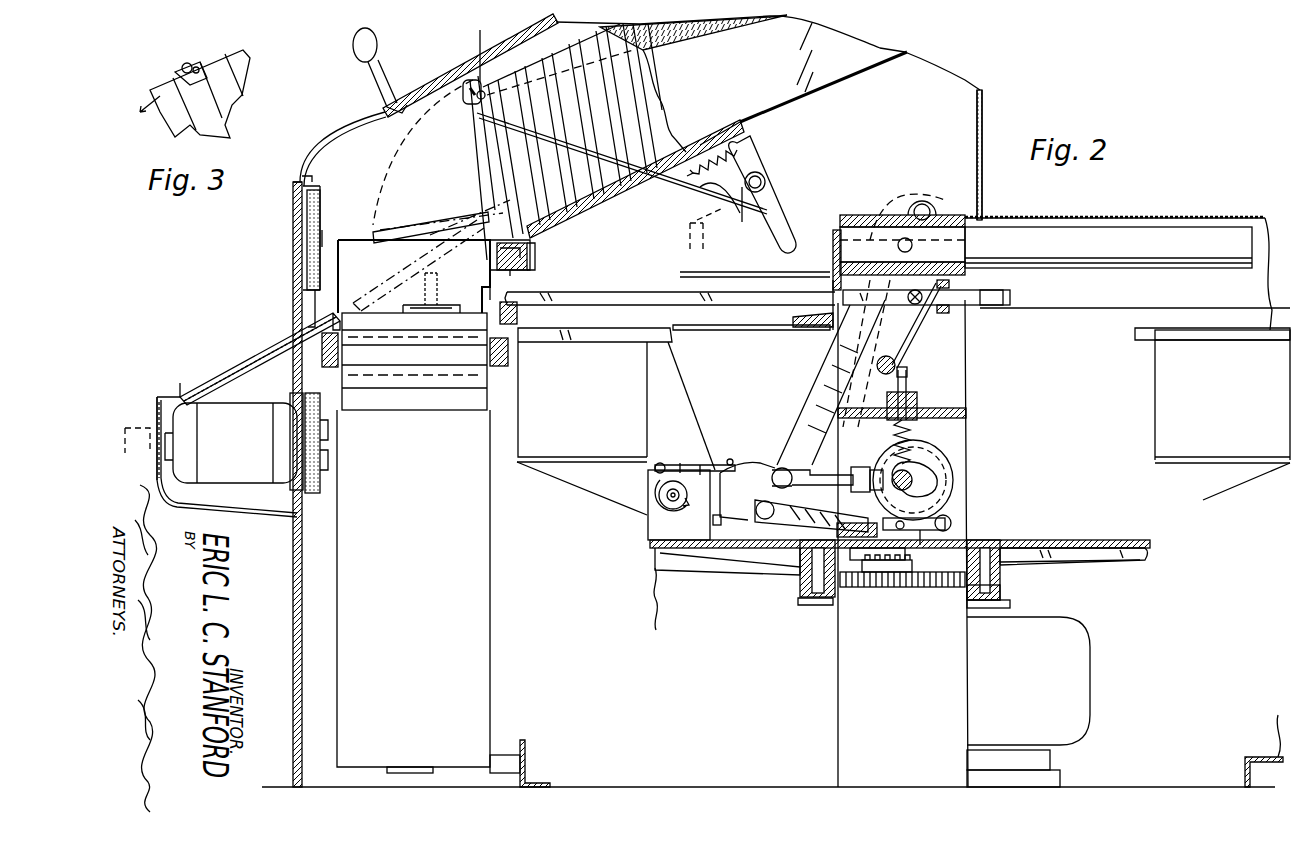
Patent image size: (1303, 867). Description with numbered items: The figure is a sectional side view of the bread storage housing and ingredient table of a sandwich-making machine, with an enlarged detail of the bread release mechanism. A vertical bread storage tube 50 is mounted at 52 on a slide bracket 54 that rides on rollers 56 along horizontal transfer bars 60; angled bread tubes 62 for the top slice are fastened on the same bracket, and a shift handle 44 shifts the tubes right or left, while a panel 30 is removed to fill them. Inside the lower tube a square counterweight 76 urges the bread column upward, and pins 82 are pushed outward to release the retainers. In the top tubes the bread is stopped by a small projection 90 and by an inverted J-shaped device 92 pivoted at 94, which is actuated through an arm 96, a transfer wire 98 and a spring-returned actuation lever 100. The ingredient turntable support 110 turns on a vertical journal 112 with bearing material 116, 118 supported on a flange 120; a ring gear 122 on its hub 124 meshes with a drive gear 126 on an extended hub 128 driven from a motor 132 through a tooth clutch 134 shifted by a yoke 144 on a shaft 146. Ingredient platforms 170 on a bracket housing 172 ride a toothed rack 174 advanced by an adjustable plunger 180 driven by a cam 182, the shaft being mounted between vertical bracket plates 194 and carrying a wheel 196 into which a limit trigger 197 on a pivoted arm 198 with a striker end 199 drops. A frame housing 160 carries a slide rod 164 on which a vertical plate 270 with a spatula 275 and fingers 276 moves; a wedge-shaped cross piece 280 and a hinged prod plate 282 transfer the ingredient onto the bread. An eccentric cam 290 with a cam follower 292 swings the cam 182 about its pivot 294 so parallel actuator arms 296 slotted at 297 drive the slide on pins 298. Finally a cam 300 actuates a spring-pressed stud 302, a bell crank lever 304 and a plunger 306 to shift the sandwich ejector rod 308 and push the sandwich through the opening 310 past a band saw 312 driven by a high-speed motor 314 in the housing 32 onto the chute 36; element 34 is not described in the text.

In FIG. 2, the panel 30 is at (292, 588).
In FIG. 2, the housing 32 is at (160, 485).
In FIG. 2, the housing corner 34 is at (178, 380).
In FIG. 2, the chute 36 is at (246, 352).
In FIG. 2, the shift handle 44 is at (353, 46).
In FIG. 2, the vertical bread storage tube 50 is at (492, 557).
In FIG. 2, the mounting 52 is at (492, 252).
In FIG. 2, the slide bracket 54 is at (530, 232).
In FIG. 2, the rollers 56 is at (537, 258).
In FIG. 2, the horizontal transfer bars 60 is at (516, 275).
In FIG. 2, the bread tubes 62 is at (768, 83).
In FIG. 2, the square counterweight 76 is at (510, 360).
In FIG. 2, the pins 82 is at (438, 285).
In FIG. 2, the small projection 90 is at (520, 222).
In FIG. 3, the inverted J-shaped device 92 is at (192, 50).
In FIG. 2, the inverted J-shaped device 92 is at (467, 103).
In FIG. 3, the pivot mounting 94 is at (198, 68).
In FIG. 2, the pivot mounting 94 is at (470, 62).
In FIG. 2, the arm 96 is at (470, 140).
In FIG. 2, the transfer wire 98 is at (727, 211).
In FIG. 2, the spring-returned actuation lever 100 is at (690, 220).
In FIG. 2, the ingredient turntable support 110 is at (1110, 558).
In FIG. 2, the vertical journal 112 is at (975, 530).
In FIG. 2, the bearing material 116 is at (1002, 594).
In FIG. 2, the bearing material 118 is at (995, 532).
In FIG. 2, the flange 120 is at (1010, 606).
In FIG. 2, the ring gear 122 is at (1005, 580).
In FIG. 2, the hub 124 is at (790, 560).
In FIG. 2, the drive gear 126 is at (875, 590).
In FIG. 2, the extended hub 128 is at (888, 565).
In FIG. 2, the motor 132 is at (1080, 656).
In FIG. 2, the tooth clutch 134 is at (874, 548).
In FIG. 2, the yoke 144 is at (925, 532).
In FIG. 2, the shaft 146 is at (950, 516).
In FIG. 2, the frame housing 160 is at (950, 348).
In FIG. 2, the slide rod 164 is at (1040, 235).
In FIG. 2, the ingredient platforms 170 is at (578, 462).
In FIG. 2, the bracket housing 172 is at (612, 500).
In FIG. 2, the toothed rack 174 is at (650, 628).
In FIG. 2, the adjustable plunger 180 is at (720, 518).
In FIG. 2, the cam 182 is at (770, 478).
In FIG. 2, the vertical bracket plates 194 is at (680, 395).
In FIG. 2, the wheel 196 is at (668, 510).
In FIG. 2, the limit trigger 197 is at (690, 442).
In FIG. 2, the pivoted arm 198 is at (703, 462).
In FIG. 2, the striker end 199 is at (732, 460).
In FIG. 2, the vertical plate 270 is at (690, 243).
In FIG. 2, the spatula 275 is at (730, 332).
In FIG. 2, the fingers 276 is at (750, 272).
In FIG. 2, the wedge-shaped cross piece 280 is at (518, 317).
In FIG. 2, the hinged prod plate 282 is at (800, 327).
In FIG. 2, the eccentric cam 290 is at (920, 450).
In FIG. 2, the cam follower 292 is at (875, 465).
In FIG. 2, the pivot 294 is at (788, 522).
In FIG. 2, the parallel actuator arms 296 is at (818, 398).
In FIG. 2, the slot and rearwardly extending members 297 is at (925, 204).
In FIG. 2, the pins 298 is at (912, 246).
In FIG. 2, the cam 300 is at (937, 478).
In FIG. 2, the spring-pressed stud 302 is at (912, 372).
In FIG. 2, the bell crank lever 304 is at (915, 308).
In FIG. 2, the plunger 306 is at (1010, 294).
In FIG. 2, the sandwich ejector rod 308 is at (657, 303).
In FIG. 2, the opening 310 is at (300, 290).
In FIG. 2, the band saw 312 is at (322, 428).
In FIG. 2, the high-speed motor 314 is at (215, 475).